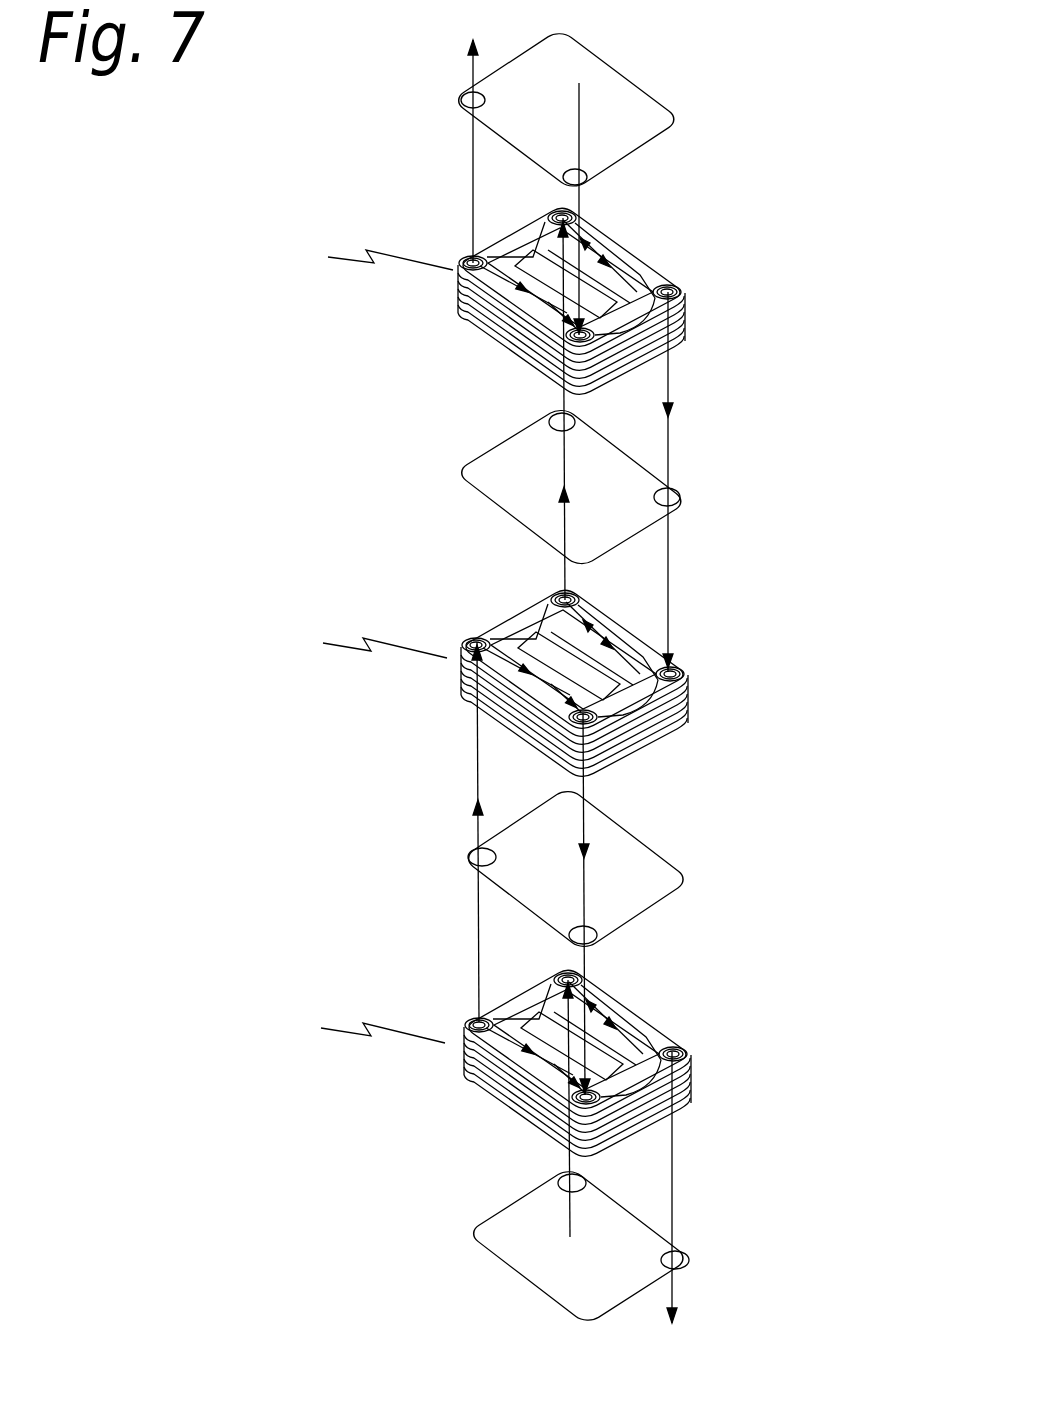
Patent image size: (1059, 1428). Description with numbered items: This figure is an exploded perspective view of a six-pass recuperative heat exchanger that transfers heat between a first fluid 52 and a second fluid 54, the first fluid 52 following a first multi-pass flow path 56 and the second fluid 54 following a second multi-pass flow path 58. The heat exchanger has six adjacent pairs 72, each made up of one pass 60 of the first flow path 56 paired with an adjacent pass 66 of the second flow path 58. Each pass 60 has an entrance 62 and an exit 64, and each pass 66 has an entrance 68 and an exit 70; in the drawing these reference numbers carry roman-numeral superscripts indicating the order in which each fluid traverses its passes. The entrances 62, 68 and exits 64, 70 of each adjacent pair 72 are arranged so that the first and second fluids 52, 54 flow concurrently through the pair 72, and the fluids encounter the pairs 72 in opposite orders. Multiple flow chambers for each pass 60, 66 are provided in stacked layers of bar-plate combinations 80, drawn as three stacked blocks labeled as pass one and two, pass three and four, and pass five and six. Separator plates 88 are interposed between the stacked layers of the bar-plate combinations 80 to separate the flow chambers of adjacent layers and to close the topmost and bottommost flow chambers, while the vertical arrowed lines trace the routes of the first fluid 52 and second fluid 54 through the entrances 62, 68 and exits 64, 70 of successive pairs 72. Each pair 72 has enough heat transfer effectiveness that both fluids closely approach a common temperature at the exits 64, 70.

The first fluid 52 is at (473, 1238).
The second fluid 54 is at (579, 88).
The first multi-pass flow path 56 is at (570, 1165).
The second multi-pass flow path 58 is at (579, 128).
The pass of the first flow path 60 is at (457, 298).
The entrance 62 is at (592, 214).
The exit 64 is at (463, 257).
The pass of the second flow path 66 is at (470, 327).
The entrance 68 is at (480, 360).
The exit 70 is at (460, 280).
The adjacent pair 72 is at (562, 210).
The bar-plate combination 80 is at (628, 390).
The separator plate 88 is at (508, 120).